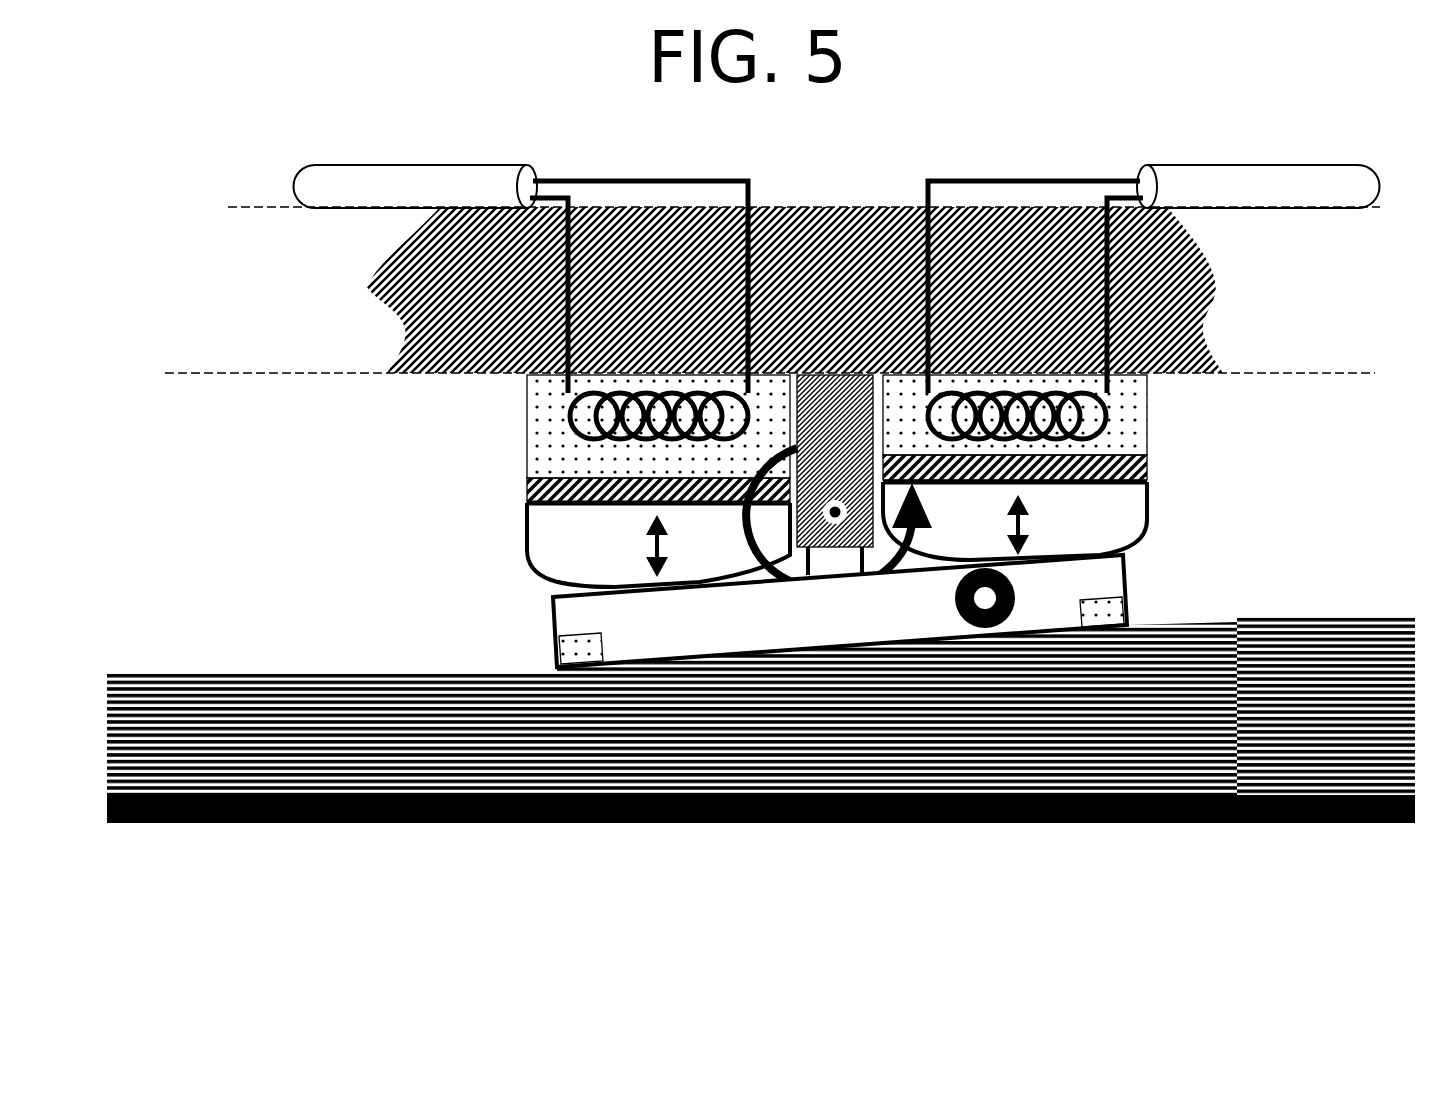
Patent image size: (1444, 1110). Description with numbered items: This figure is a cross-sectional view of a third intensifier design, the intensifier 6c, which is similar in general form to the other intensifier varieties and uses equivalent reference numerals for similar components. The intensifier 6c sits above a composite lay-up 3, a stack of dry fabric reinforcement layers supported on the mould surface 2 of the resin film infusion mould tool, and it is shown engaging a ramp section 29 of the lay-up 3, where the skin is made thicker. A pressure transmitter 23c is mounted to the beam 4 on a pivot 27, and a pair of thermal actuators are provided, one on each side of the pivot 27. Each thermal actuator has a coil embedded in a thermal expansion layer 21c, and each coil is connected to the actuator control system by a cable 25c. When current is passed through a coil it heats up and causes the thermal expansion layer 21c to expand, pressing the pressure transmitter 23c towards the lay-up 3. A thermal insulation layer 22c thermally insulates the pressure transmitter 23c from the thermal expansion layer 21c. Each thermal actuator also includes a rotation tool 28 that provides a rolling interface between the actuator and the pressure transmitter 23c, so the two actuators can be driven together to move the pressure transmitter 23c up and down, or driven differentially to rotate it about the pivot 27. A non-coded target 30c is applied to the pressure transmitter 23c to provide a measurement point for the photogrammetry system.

The mould surface 2 is at (210, 795).
The composite lay-up 3 is at (713, 743).
The beam 4 is at (665, 253).
The intensifier 6c is at (340, 601).
The thermal expansion layer 21c is at (912, 392).
The thermal insulation layer 22c is at (1062, 468).
The pressure transmitter 23c is at (626, 625).
The cable 25c is at (330, 178).
The pivot 27 is at (835, 507).
The rotation tool 28 is at (604, 546).
The ramp section 29 is at (897, 638).
The non-coded target 30c is at (1017, 590).